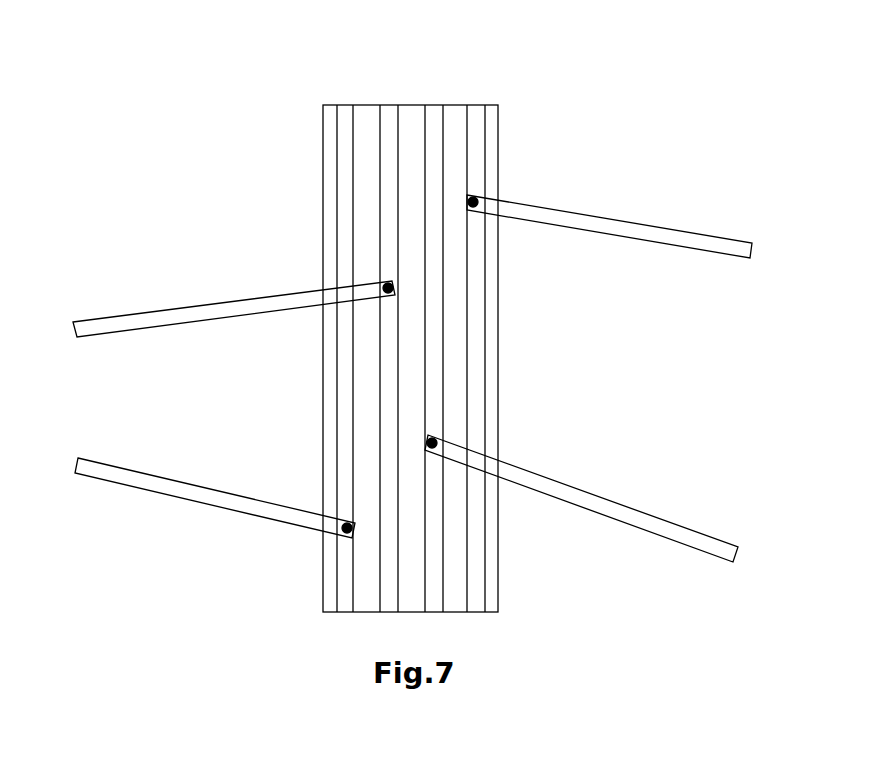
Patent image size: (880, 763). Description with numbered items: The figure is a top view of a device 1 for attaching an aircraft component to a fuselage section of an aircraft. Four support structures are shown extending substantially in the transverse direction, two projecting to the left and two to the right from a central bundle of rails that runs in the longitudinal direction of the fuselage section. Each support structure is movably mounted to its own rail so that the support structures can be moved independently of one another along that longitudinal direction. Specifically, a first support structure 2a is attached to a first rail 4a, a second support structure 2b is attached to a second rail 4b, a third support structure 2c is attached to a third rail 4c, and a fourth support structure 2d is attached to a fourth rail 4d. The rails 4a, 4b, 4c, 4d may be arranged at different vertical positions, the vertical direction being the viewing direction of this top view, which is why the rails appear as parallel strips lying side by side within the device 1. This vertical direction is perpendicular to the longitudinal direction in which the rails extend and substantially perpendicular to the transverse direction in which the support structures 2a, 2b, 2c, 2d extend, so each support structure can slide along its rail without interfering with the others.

The device 1 is at (237, 97).
The first support structure 2a is at (272, 268).
The second support structure 2b is at (254, 480).
The third support structure 2c is at (568, 184).
The fourth support structure 2d is at (541, 454).
The first rail 4a is at (387, 592).
The second rail 4b is at (344, 563).
The third rail 4c is at (476, 580).
The fourth rail 4d is at (432, 505).